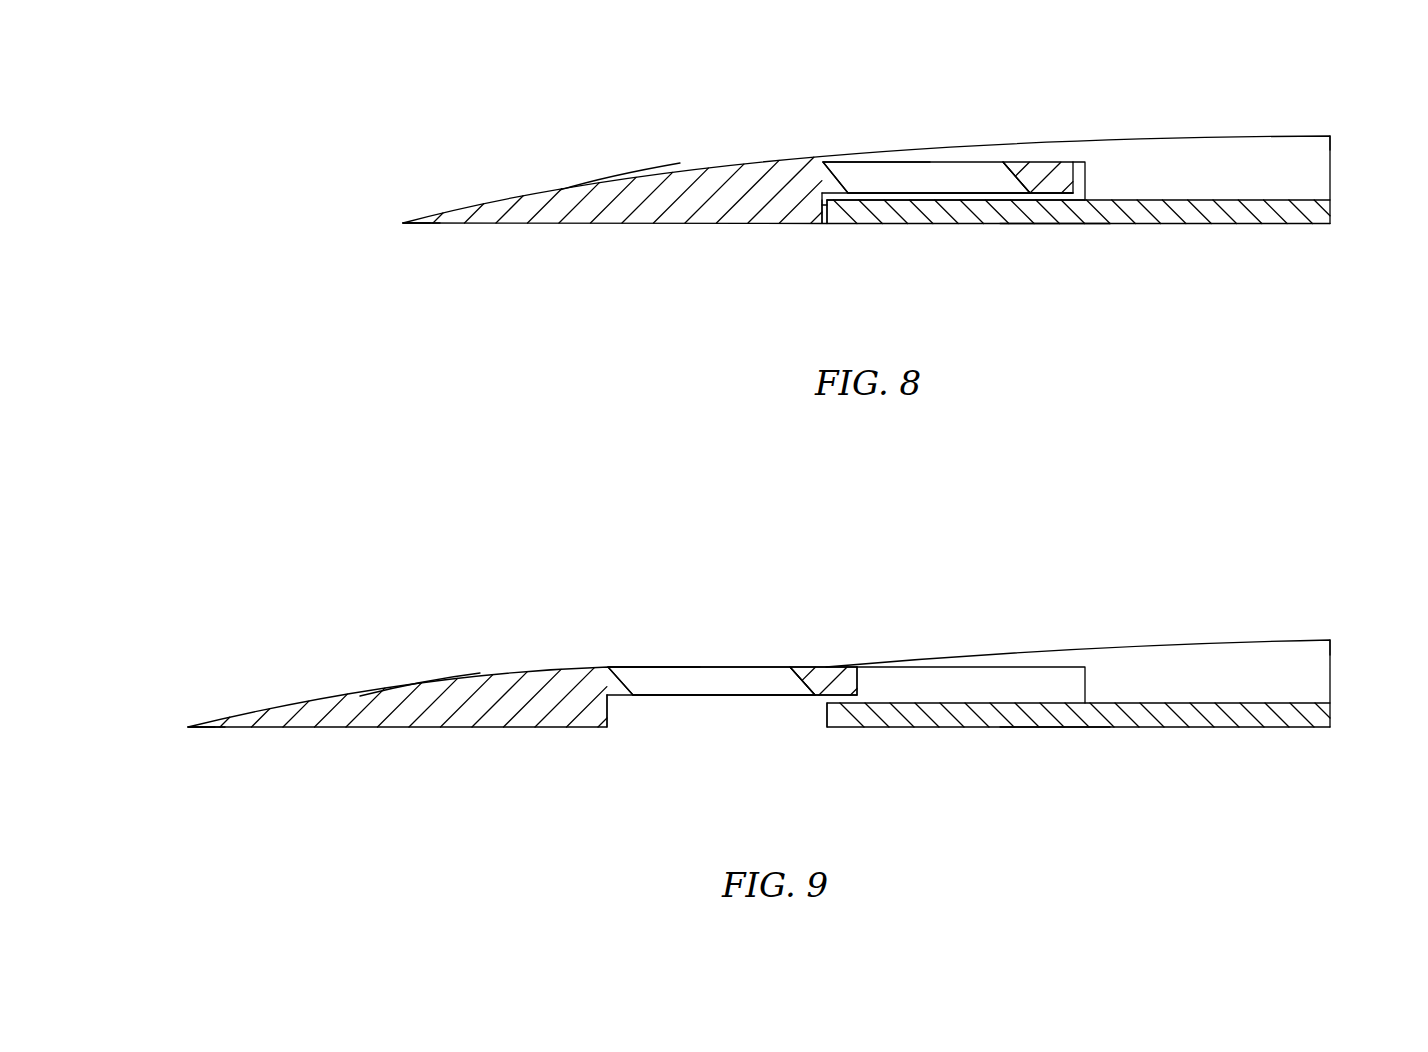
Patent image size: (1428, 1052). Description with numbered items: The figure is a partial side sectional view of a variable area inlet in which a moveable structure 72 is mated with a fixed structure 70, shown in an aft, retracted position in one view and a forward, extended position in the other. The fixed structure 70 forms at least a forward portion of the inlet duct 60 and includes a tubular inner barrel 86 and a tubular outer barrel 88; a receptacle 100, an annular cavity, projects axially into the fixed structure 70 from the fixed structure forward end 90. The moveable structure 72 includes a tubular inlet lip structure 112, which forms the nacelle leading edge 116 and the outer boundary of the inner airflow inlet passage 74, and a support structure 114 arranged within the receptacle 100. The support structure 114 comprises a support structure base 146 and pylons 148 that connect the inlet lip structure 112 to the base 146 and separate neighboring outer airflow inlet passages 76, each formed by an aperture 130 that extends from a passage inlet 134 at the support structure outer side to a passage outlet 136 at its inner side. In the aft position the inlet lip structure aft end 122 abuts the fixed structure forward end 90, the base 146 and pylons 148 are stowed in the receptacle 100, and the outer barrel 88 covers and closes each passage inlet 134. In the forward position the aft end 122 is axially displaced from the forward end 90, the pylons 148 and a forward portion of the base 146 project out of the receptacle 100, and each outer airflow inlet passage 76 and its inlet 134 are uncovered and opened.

In FIG. 8, the inlet duct 60 is at (1280, 260).
In FIG. 9, the inlet duct 60 is at (1280, 765).
In FIG. 8, the fixed structure 70 is at (1340, 109).
In FIG. 9, the fixed structure 70 is at (1340, 611).
In FIG. 8, the moveable structure 72 is at (738, 148).
In FIG. 9, the moveable structure 72 is at (523, 656).
In FIG. 8, the inner airflow inlet passage 74 is at (500, 312).
In FIG. 9, the inner airflow inlet passage 74 is at (285, 817).
In FIG. 8, the outer airflow inlet passage 76 is at (952, 176).
In FIG. 9, the outer airflow inlet passage 76 is at (708, 674).
In FIG. 8, the inner barrel 86 is at (1057, 230).
In FIG. 9, the inner barrel 86 is at (1056, 735).
In FIG. 8, the outer barrel 88 is at (1160, 136).
In FIG. 9, the outer barrel 88 is at (1160, 636).
In FIG. 8, the fixed structure forward end 90 is at (826, 210).
In FIG. 9, the fixed structure forward end 90 is at (827, 716).
In FIG. 8, the receptacle 100 is at (1089, 180).
In FIG. 9, the receptacle 100 is at (970, 682).
In FIG. 8, the inlet lip structure 112 is at (633, 170).
In FIG. 9, the inlet lip structure 112 is at (418, 676).
In FIG. 8, the support structure 114 is at (1060, 161).
In FIG. 9, the support structure 114 is at (810, 664).
In FIG. 8, the leading edge 116 is at (403, 223).
In FIG. 9, the leading edge 116 is at (188, 727).
In FIG. 8, the inlet lip structure aft end 122 is at (836, 224).
In FIG. 9, the inlet lip structure aft end 122 is at (608, 727).
In FIG. 8, the aperture 130 is at (1016, 177).
In FIG. 9, the aperture 130 is at (802, 681).
In FIG. 8, the passage inlet 134 is at (877, 162).
In FIG. 9, the passage inlet 134 is at (648, 664).
In FIG. 8, the passage outlet 136 is at (890, 201).
In FIG. 9, the passage outlet 136 is at (665, 701).
In FIG. 8, the support structure base 146 is at (1046, 193).
In FIG. 9, the support structure base 146 is at (860, 680).
In FIG. 8, the pylon 148 is at (910, 173).
In FIG. 9, the pylon 148 is at (748, 665).